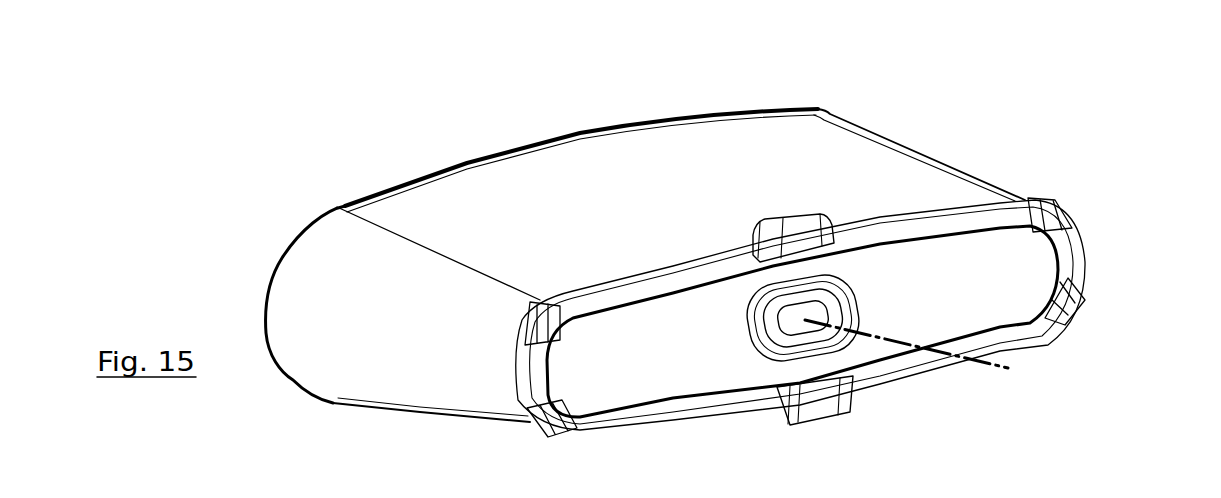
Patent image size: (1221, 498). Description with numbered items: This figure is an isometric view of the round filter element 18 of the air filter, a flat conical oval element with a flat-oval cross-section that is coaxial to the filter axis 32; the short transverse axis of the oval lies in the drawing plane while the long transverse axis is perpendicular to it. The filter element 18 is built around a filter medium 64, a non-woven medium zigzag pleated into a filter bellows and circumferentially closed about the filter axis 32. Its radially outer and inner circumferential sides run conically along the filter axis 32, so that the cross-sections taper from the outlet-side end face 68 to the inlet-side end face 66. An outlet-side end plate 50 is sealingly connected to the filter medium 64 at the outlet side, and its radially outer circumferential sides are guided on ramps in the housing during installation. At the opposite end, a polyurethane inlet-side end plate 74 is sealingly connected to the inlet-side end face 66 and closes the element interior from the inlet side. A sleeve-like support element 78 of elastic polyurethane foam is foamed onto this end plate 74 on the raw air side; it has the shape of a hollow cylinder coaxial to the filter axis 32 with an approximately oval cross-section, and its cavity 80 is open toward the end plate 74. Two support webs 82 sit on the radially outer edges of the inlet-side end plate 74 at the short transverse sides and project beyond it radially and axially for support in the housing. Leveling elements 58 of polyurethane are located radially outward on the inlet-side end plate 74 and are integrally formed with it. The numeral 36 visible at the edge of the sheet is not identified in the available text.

The filter element 18 is at (273, 96).
The filter axis 32 is at (1008, 368).
The base 36 is at (258, 492).
The outlet-side end plate 50 is at (279, 262).
The leveling elements 58 is at (795, 222).
The filter medium 64 is at (640, 165).
The inlet-side end face 66 is at (1032, 251).
The outlet-side end face 68 is at (462, 164).
The inlet-side end plate 74 is at (628, 298).
The support element 78 is at (853, 312).
The cavity 80 is at (780, 316).
The support webs 82 is at (1050, 213).